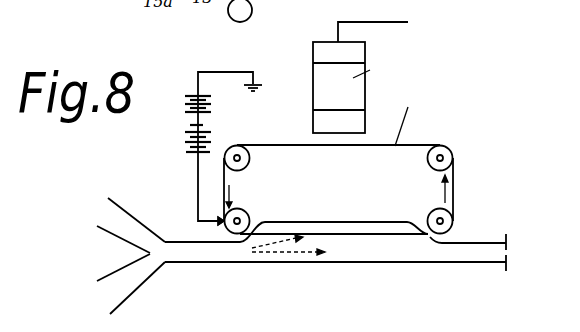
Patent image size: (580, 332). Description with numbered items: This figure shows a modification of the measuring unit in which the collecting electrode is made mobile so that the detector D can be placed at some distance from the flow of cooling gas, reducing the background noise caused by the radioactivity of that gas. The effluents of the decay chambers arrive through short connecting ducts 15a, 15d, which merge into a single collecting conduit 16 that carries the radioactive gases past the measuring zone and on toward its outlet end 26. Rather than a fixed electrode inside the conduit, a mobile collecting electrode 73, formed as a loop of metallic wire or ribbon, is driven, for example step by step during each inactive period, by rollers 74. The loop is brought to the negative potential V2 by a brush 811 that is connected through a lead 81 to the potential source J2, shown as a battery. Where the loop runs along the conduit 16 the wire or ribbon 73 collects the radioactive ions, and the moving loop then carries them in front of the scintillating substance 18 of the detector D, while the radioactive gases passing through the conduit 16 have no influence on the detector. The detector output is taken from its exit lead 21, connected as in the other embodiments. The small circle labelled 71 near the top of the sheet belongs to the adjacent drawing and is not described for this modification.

The roller 71 is at (253, 12).
The exit lead 21 is at (385, 20).
The scintillating substance 18 is at (364, 123).
The current source J2 is at (209, 112).
The lead 81 is at (197, 170).
The brush 811 is at (202, 228).
The mobile collecting electrode 73 is at (379, 234).
The rollers 74 is at (446, 148).
The collecting conduit 16 is at (287, 263).
The tube outlet end 26 is at (498, 238).
The short connecting duct 15a is at (123, 200).
The short connecting duct 15d is at (133, 286).